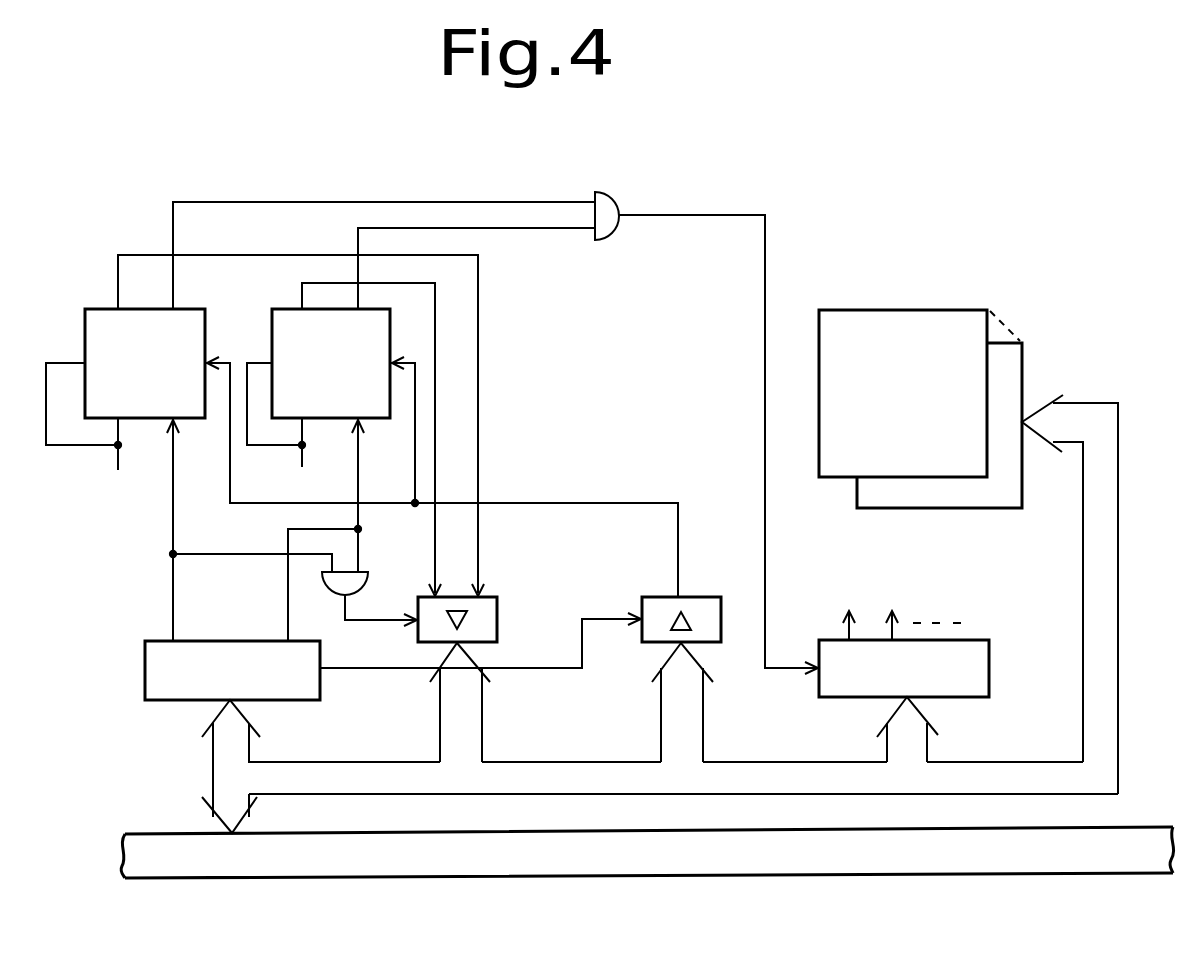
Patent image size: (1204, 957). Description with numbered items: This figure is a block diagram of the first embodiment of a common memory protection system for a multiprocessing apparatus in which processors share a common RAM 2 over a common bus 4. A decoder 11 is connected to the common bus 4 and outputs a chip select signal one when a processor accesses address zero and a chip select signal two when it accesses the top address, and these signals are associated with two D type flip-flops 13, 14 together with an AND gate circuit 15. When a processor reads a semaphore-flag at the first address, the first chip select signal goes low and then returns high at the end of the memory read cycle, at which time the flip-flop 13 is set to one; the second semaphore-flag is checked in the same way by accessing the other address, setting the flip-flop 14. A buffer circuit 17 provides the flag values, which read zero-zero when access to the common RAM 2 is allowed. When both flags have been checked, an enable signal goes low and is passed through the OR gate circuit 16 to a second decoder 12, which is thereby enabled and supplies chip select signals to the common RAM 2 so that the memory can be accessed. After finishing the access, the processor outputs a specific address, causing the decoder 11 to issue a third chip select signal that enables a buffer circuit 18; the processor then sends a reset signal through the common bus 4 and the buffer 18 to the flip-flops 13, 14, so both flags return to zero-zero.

The common RAM 2 is at (923, 308).
The common bus 4 is at (160, 833).
The decoder 11 is at (145, 657).
The decoder 12 is at (989, 663).
The D type flip-flop 13 is at (103, 308).
The D type flip-flop 14 is at (283, 307).
The AND gate circuit 15 is at (368, 583).
The OR gate circuit 16 is at (618, 203).
The buffer circuit 17 is at (497, 597).
The buffer circuit 18 is at (718, 597).